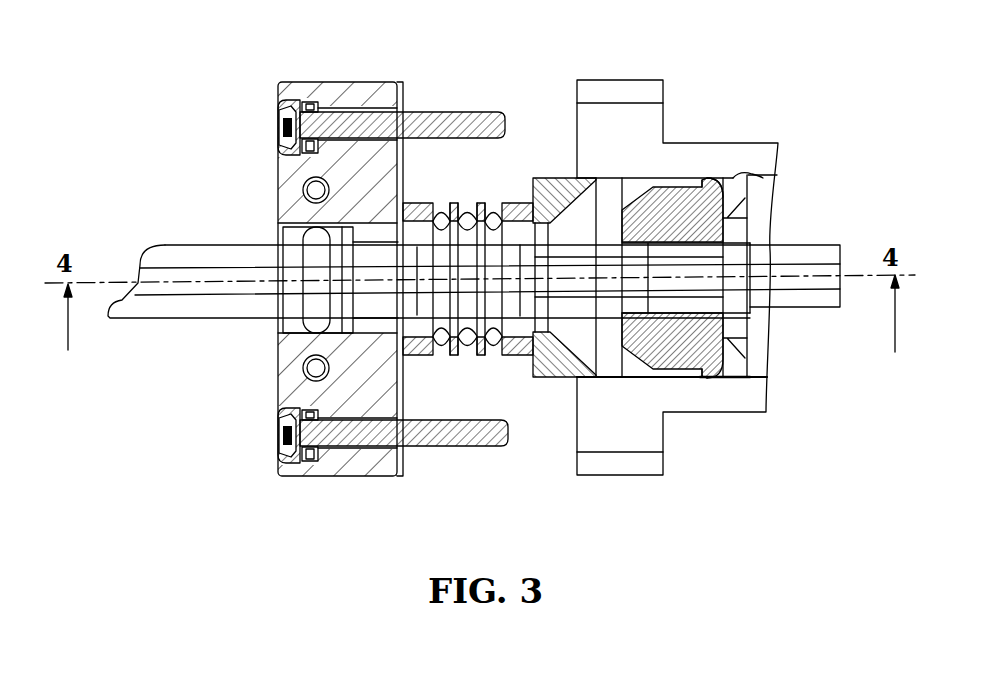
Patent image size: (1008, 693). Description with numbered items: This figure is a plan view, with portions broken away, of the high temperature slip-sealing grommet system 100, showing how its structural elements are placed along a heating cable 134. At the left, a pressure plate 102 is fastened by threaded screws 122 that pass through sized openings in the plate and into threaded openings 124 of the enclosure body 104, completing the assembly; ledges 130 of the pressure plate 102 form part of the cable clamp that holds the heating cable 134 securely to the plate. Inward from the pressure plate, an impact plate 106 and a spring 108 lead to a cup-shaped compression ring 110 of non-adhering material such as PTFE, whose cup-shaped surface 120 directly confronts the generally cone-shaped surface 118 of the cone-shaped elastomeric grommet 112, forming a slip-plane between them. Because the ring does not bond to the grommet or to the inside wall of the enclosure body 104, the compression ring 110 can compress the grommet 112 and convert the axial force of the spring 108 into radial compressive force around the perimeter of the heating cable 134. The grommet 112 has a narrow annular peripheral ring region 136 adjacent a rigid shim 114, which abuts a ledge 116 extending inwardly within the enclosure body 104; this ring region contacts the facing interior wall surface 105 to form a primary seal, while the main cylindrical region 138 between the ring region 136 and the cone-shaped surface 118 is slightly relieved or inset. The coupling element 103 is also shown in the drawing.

The high temperature slip-sealing grommet system 100 is at (210, 470).
The pressure plate 102 is at (338, 478).
The coupling member 103 is at (434, 357).
The enclosure body 104 is at (747, 398).
The interior wall surface 105 is at (710, 182).
The impact plate 106 is at (408, 203).
The spring 108 is at (452, 357).
The cup-shaped compression ring 110 is at (548, 178).
The cone-shaped elastomeric grommet 112 is at (682, 185).
The rigid shim 114 is at (740, 358).
The ledge 116 is at (745, 173).
The cone-shaped surface 118 is at (633, 197).
The cup-shaped surface 120 is at (537, 353).
The threaded screws 122 is at (473, 447).
The threaded openings 124 is at (640, 443).
The ledges 130 is at (287, 178).
The heating cable 134 is at (145, 277).
The annular peripheral ring region 136 is at (712, 385).
The main cylindrical region 138 is at (688, 372).